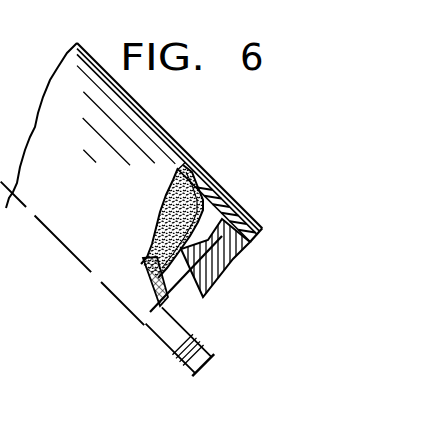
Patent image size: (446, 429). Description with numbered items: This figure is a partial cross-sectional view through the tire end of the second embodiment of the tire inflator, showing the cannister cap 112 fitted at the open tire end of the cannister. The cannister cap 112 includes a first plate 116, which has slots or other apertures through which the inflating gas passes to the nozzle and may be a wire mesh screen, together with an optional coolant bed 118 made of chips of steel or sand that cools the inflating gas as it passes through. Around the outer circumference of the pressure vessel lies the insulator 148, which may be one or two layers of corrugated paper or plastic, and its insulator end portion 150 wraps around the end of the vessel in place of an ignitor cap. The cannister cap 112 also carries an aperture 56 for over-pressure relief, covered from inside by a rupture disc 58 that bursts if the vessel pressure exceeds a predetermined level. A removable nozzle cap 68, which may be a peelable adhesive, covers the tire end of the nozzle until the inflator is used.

The aperture 56 is at (196, 288).
The rupture disc 58 is at (155, 240).
The nozzle cap 68 is at (200, 347).
The cannister cap 112 is at (212, 190).
The first plate 116 is at (148, 270).
The coolant bed 118 is at (162, 204).
The insulator 148 is at (248, 215).
The insulator end portion 150 is at (223, 256).